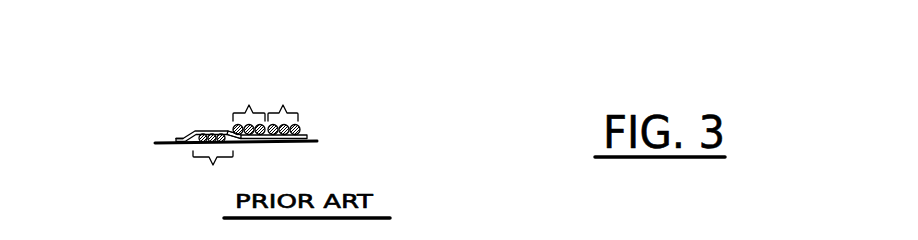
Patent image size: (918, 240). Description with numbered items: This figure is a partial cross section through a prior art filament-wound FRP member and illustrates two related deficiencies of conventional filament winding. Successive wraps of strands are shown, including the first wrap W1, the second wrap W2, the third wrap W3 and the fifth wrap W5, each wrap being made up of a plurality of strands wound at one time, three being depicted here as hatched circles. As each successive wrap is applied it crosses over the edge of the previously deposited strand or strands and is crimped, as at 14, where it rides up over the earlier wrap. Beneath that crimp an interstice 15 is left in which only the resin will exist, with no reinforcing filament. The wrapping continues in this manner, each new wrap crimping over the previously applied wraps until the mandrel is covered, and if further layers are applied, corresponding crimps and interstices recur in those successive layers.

The crimp 14 is at (192, 127).
The interstice 15 is at (228, 126).
The first wrap W1 is at (208, 172).
The second wrap W2 is at (178, 136).
The third wrap W3 is at (249, 100).
The fifth wrap W5 is at (285, 100).